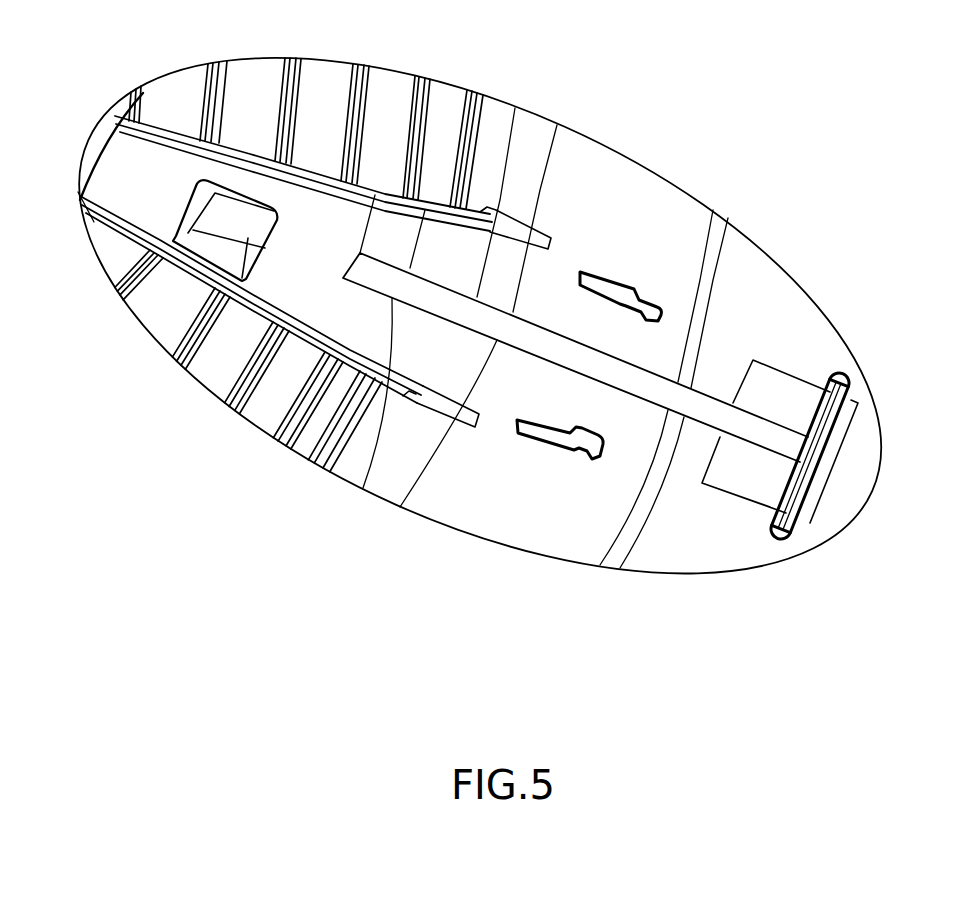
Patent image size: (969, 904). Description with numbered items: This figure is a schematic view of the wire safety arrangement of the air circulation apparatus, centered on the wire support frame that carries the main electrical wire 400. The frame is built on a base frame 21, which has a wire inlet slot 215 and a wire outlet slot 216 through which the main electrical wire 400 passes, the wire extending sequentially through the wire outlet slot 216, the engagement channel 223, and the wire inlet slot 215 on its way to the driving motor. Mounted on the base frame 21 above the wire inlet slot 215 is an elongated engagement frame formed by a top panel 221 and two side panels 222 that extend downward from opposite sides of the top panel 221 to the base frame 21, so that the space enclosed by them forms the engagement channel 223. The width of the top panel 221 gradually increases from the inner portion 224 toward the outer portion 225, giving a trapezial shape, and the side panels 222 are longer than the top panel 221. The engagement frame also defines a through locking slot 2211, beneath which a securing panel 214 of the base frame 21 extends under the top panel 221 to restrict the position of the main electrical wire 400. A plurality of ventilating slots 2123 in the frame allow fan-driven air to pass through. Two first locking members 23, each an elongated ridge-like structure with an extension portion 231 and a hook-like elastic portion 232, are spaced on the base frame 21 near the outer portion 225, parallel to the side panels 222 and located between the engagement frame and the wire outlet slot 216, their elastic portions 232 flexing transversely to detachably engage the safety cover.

The base frame 21 is at (450, 468).
The securing panel 214 is at (215, 243).
The wire inlet slot 215 is at (385, 228).
The wire outlet slot 216 is at (802, 402).
The top panel 221 is at (287, 283).
The side panels 222 is at (165, 315).
The engagement channel 223 is at (455, 265).
The inner portion 224 is at (167, 168).
The outer portion 225 is at (410, 415).
The ventilating slots 2123 is at (267, 407).
The through locking slot 2211 is at (228, 183).
The first locking members 23 is at (650, 281).
The extension portion 231 is at (610, 273).
The hook-like elastic portion 232 is at (668, 283).
The main electrical wire 400 is at (708, 410).